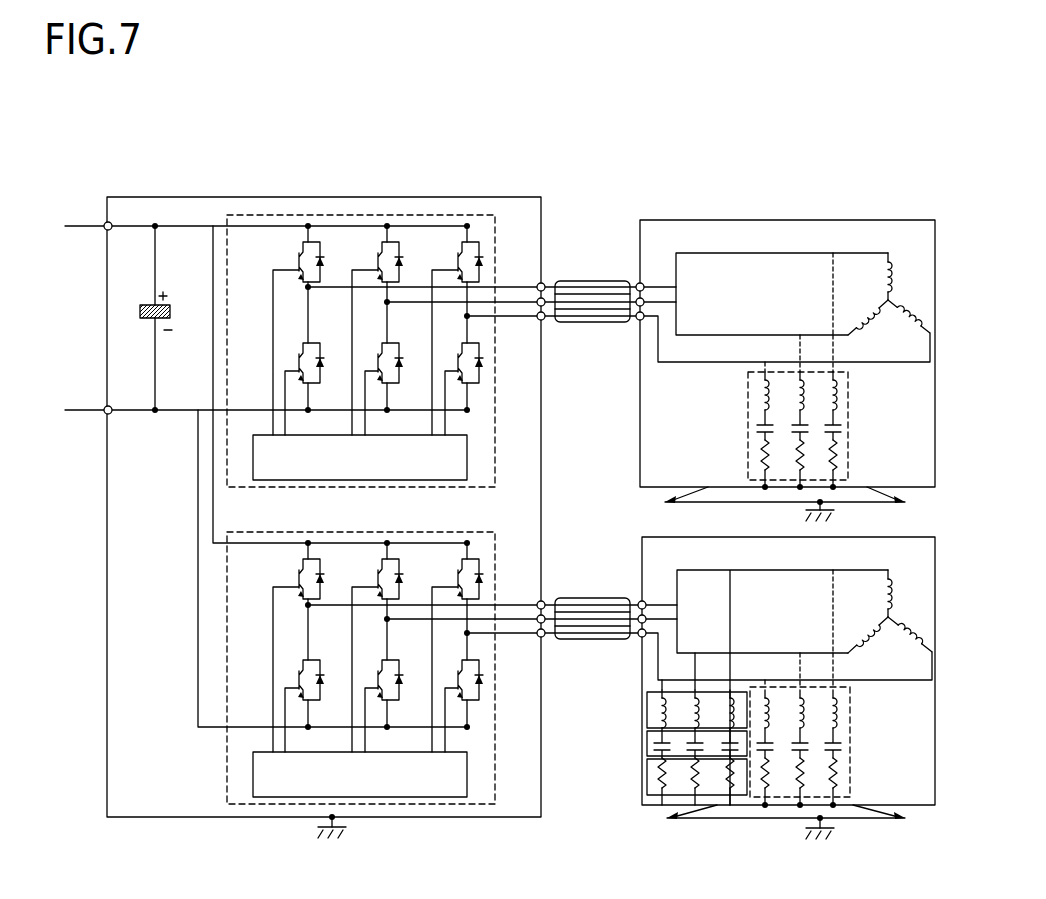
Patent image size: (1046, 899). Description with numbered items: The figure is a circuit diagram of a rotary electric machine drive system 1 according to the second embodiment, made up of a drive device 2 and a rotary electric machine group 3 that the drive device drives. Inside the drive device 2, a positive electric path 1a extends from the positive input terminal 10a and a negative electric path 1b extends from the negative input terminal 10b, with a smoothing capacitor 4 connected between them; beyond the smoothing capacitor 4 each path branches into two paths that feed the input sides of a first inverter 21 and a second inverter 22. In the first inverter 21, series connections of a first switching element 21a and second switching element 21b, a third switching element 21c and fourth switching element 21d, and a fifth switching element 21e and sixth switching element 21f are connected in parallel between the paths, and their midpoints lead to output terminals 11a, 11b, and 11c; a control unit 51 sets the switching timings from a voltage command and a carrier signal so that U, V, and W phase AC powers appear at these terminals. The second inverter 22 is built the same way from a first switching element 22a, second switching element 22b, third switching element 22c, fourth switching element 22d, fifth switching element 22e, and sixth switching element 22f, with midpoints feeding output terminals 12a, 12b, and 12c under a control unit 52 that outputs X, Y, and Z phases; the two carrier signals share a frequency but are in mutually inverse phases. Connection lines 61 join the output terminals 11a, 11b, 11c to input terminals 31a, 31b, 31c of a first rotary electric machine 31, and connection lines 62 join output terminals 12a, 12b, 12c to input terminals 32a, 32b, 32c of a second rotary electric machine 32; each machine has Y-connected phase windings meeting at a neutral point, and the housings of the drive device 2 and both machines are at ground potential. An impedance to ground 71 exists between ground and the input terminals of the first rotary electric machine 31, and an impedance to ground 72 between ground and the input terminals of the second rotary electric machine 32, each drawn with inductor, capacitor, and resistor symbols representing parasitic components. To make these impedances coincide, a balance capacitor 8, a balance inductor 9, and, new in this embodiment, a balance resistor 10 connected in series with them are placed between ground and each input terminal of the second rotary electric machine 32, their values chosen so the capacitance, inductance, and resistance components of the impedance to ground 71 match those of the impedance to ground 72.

The rotary electric machine drive system 1 is at (509, 478).
The drive device 2 is at (497, 197).
The rotary electric machine group 3 is at (851, 218).
The smoothing capacitor 4 is at (148, 321).
The positive electric path 1a is at (196, 229).
The negative electric path 1b is at (177, 414).
The balance capacitor 8 is at (645, 743).
The balance inductor 9 is at (645, 710).
The balance resistor 10 is at (645, 777).
The positive input terminal 10a is at (105, 221).
The negative input terminal 10b is at (105, 406).
The output terminal 11a is at (542, 283).
The output terminal 11b is at (538, 307).
The output terminal 11c is at (545, 321).
The output terminal 12a is at (542, 601).
The output terminal 12b is at (538, 624).
The output terminal 12c is at (545, 638).
The first inverter 21 is at (496, 252).
The first switching element 21a is at (300, 246).
The second switching element 21b is at (380, 246).
The third switching element 21c is at (460, 246).
The fourth switching element 21d is at (292, 357).
The fifth switching element 21e is at (372, 357).
The sixth switching element 21f is at (452, 357).
The second inverter 22 is at (496, 570).
The first switching element 22a is at (300, 563).
The second switching element 22b is at (380, 563).
The third switching element 22c is at (460, 563).
The fourth switching element 22d is at (292, 674).
The fifth switching element 22e is at (372, 674).
The sixth switching element 22f is at (452, 674).
The first rotary electric machine 31 is at (910, 219).
The input terminal 31a is at (643, 283).
The input terminal 31b is at (636, 320).
The input terminal 31c is at (646, 304).
The second rotary electric machine 32 is at (912, 536).
The input terminal 32a is at (645, 601).
The input terminal 32b is at (638, 637).
The input terminal 32c is at (648, 621).
The control unit 51 is at (469, 459).
The control unit 52 is at (469, 776).
The connection lines 61 is at (601, 280).
The connection lines 62 is at (601, 597).
The impedance to ground 71 is at (849, 425).
The impedance to ground 72 is at (851, 745).